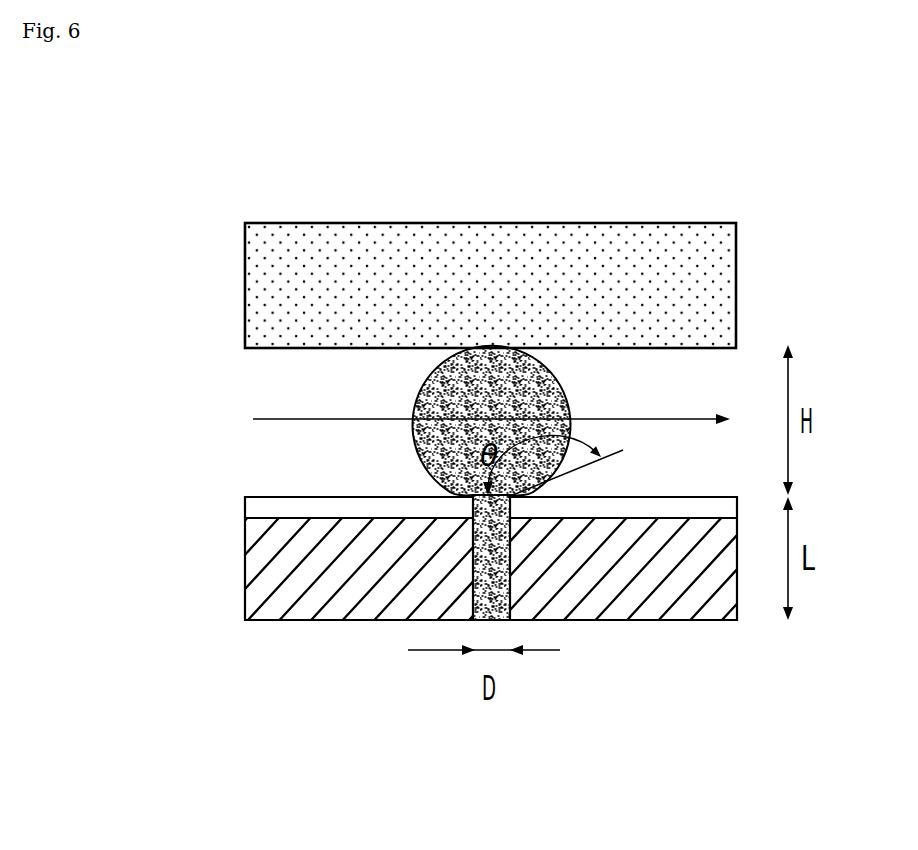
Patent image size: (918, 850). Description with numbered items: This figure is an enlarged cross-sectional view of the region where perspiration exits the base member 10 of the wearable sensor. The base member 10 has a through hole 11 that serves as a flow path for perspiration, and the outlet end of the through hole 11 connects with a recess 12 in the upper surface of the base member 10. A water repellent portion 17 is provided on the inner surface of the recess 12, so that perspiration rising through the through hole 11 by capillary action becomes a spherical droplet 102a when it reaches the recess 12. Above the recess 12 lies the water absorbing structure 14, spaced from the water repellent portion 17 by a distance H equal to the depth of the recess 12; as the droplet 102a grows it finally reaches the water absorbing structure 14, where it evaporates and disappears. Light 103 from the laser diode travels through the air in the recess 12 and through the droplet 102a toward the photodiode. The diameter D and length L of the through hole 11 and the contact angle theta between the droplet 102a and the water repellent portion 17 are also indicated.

The water absorbing structure 14 is at (660, 223).
The recess 12 is at (313, 388).
The base member 10 is at (247, 577).
The water repellent portion 17 is at (247, 510).
The through hole 11 is at (473, 566).
The droplet 102a is at (547, 393).
The light 103 is at (353, 420).